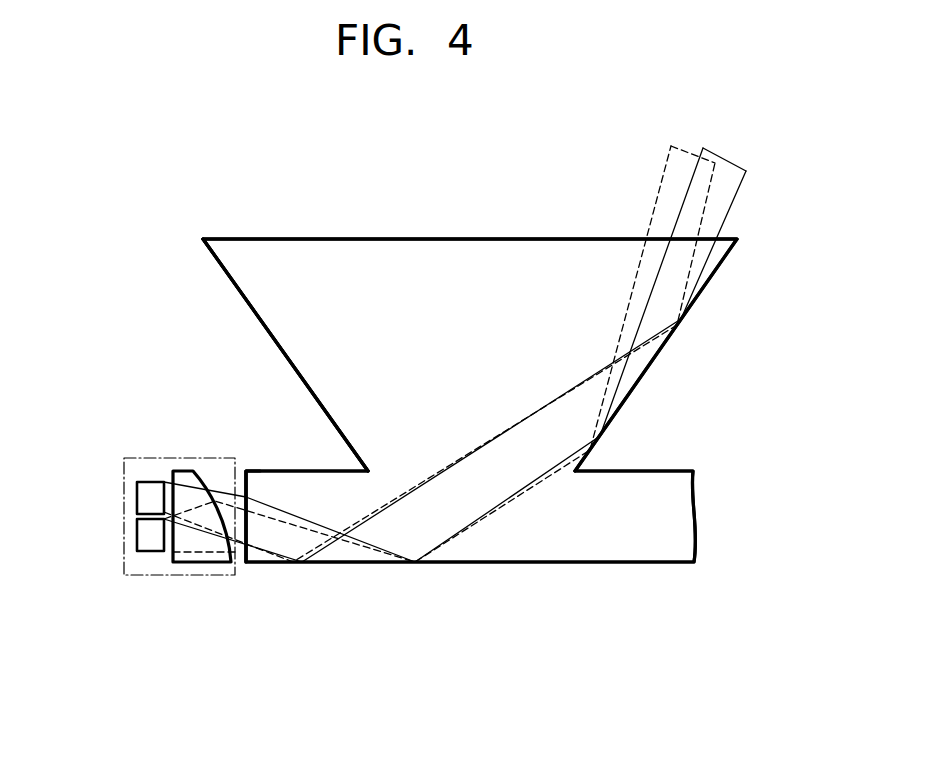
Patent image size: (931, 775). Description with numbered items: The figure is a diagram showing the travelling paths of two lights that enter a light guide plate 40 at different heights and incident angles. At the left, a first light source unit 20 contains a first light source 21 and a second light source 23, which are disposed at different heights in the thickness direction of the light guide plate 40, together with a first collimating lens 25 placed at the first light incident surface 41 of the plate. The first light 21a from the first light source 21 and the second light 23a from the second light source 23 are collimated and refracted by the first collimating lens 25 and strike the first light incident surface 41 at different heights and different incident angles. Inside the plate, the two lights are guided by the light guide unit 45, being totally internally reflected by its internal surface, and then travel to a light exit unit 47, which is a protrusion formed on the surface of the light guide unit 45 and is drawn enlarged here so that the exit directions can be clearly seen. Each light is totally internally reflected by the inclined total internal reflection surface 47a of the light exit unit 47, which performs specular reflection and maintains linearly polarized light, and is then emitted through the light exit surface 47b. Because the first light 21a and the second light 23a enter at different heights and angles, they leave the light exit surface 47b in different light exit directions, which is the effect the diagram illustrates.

The first light source unit 20 is at (160, 578).
The first light source 21 is at (137, 540).
The second light source 23 is at (137, 497).
The first collimating lens 25 is at (207, 565).
The first light 21a is at (260, 556).
The second light 23a is at (281, 507).
The light guide plate 40 is at (591, 575).
The first light incident surface 41 is at (236, 478).
The light guide unit 45 is at (509, 552).
The light exit unit 47 is at (420, 262).
The total internal reflection surface 47a is at (255, 313).
The light exit surface 47b is at (262, 240).